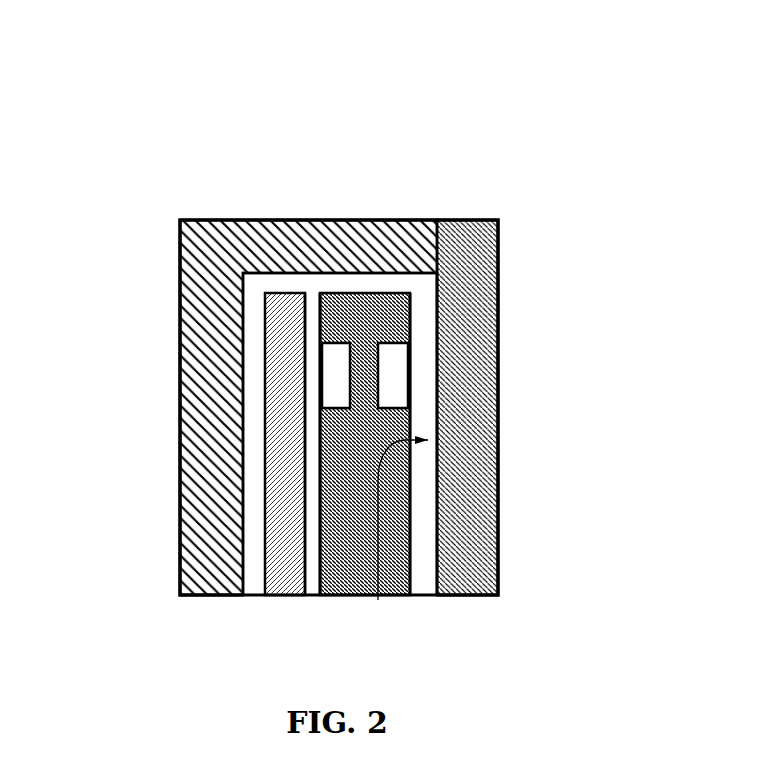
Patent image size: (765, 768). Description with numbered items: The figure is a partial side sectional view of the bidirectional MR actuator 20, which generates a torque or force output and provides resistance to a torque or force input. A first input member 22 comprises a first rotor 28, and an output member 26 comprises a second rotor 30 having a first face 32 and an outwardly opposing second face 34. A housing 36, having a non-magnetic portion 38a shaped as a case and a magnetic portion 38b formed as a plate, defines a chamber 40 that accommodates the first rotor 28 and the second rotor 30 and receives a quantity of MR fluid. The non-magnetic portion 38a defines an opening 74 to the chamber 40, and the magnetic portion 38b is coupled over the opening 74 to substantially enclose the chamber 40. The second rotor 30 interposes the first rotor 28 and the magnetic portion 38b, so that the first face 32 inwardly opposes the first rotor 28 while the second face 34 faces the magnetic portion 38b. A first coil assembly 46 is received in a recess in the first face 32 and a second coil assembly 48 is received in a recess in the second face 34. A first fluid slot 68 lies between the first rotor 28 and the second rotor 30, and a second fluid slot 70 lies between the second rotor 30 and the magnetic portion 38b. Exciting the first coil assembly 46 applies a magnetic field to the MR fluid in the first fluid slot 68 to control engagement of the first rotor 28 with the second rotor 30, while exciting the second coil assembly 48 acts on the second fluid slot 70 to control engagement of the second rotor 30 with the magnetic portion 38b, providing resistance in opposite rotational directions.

The bidirectional MR actuator 20 is at (513, 110).
The first input member 22 is at (157, 500).
The output member 26 is at (512, 478).
The first rotor 28 is at (280, 317).
The second rotor 30 is at (370, 313).
The first face 32 is at (317, 537).
The second face 34 is at (415, 535).
The housing 36 is at (175, 373).
The non-magnetic portion 38a is at (417, 213).
The magnetic portion 38b is at (467, 213).
The chamber 40 is at (310, 292).
The first coil assembly 46 is at (333, 382).
The second coil assembly 48 is at (400, 377).
The first fluid slot 68 is at (313, 563).
The second fluid slot 70 is at (423, 563).
The opening 74 is at (378, 600).